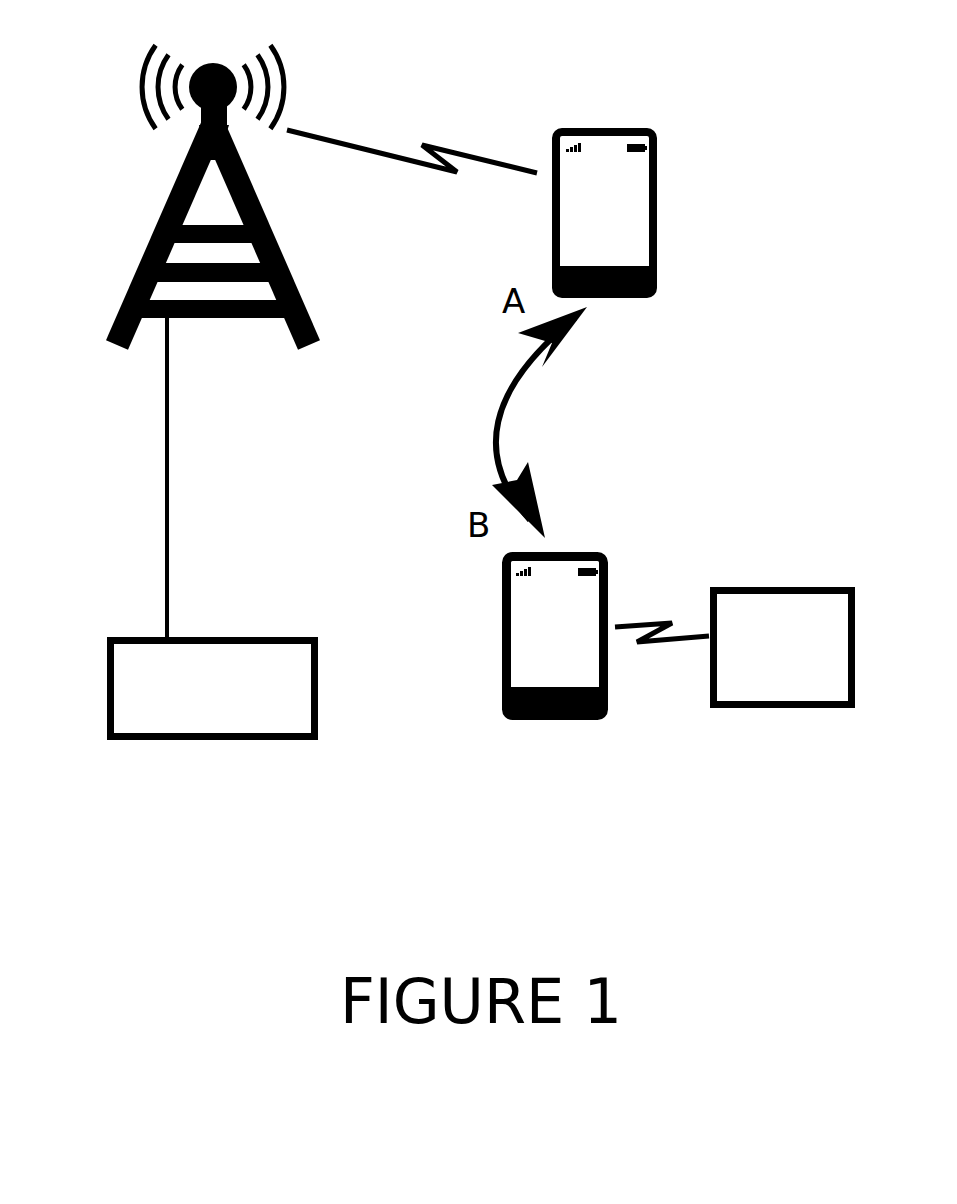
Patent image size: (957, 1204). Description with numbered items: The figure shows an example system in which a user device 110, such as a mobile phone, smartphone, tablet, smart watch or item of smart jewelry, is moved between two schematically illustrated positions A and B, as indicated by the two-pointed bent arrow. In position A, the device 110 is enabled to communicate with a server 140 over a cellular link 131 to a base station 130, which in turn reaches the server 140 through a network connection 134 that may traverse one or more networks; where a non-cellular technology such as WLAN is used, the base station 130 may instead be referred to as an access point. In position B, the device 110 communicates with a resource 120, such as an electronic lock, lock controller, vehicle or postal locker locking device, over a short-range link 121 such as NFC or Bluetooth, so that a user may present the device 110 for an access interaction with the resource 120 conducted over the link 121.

The user device 110 is at (560, 720).
The resource 120 is at (810, 663).
The link 121 is at (672, 624).
The base station 130 is at (161, 257).
The cellular link 131 is at (427, 143).
The network connection 134 is at (165, 540).
The server 140 is at (233, 708).